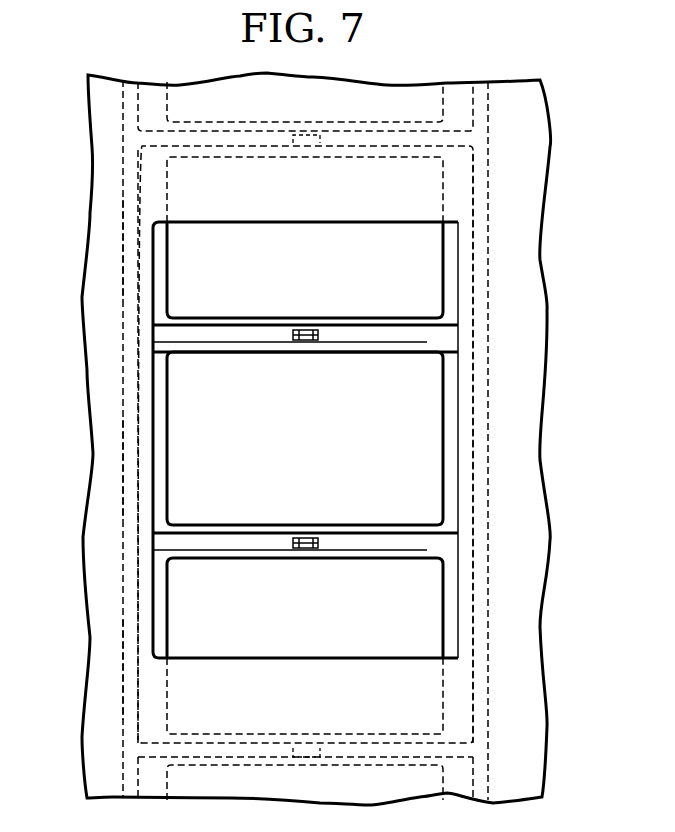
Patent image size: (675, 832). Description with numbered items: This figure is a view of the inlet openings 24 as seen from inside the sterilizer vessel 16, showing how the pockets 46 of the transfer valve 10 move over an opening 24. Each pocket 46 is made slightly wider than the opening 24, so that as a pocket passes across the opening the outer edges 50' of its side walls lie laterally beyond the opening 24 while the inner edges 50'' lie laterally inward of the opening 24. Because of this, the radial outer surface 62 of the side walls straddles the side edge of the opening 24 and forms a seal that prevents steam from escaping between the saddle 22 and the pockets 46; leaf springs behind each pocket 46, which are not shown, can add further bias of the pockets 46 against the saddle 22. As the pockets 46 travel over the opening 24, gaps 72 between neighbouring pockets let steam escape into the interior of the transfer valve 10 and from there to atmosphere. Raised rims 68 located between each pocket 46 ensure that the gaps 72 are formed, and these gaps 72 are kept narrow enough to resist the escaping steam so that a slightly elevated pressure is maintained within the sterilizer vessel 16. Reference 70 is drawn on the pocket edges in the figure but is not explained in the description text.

The transfer valve 10 is at (490, 132).
The sterilizer vessel 16 is at (107, 95).
The saddle 22 is at (488, 403).
The inlet opening 24 is at (330, 225).
The pocket 46 is at (153, 178).
The outer edge of side wall 50' is at (85, 460).
The inner edge of side wall 50'' is at (387, 440).
The radial outer surface 62 is at (148, 198).
The raised rim 68 is at (297, 342).
The panel edge 70 is at (395, 318).
The gap 72 is at (437, 330).